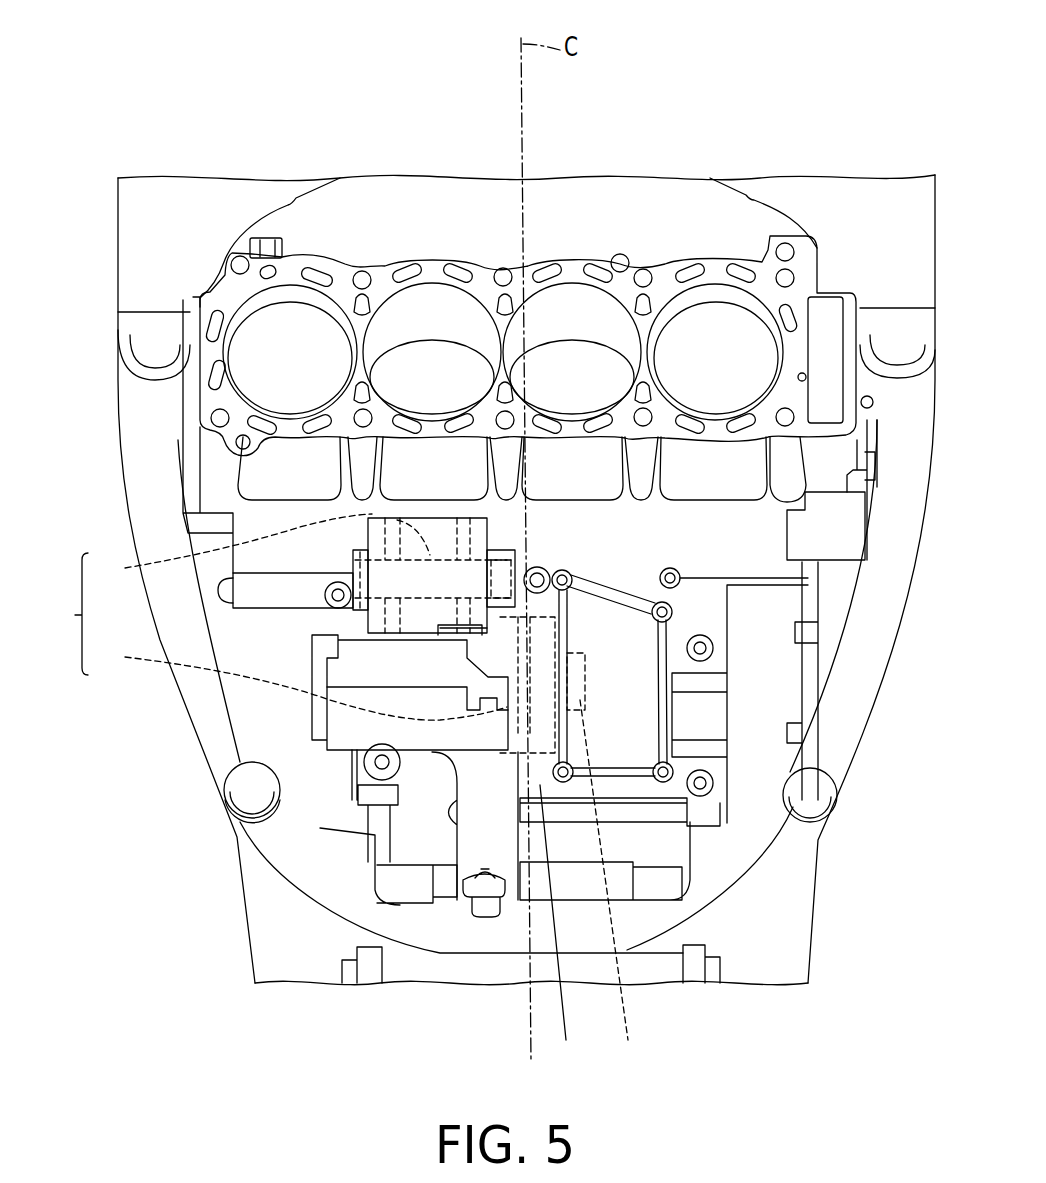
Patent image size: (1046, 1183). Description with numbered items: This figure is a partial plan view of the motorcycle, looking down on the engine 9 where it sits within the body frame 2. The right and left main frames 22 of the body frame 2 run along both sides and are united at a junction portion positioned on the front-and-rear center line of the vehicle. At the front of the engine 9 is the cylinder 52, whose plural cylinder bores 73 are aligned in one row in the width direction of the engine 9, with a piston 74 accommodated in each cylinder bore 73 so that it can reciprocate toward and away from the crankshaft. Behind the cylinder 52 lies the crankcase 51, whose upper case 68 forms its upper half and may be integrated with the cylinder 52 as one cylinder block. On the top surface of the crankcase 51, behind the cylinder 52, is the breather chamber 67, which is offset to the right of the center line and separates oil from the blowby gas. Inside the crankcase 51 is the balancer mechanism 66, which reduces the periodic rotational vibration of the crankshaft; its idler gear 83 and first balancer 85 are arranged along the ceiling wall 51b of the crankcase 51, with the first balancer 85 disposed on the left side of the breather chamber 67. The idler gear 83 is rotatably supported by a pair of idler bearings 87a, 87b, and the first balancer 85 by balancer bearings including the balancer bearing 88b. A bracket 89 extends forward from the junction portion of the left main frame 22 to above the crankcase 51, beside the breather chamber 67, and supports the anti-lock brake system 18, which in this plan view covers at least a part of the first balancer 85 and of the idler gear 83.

The body frame 2 is at (120, 481).
The engine 9 is at (666, 82).
The anti-lock brake system 18 is at (273, 803).
The main frames 22 is at (130, 510).
The crankcase 51 is at (268, 610).
The ceiling wall 51b is at (564, 926).
The cylinder 52 is at (190, 320).
The balancer mechanism 66 is at (65, 614).
The breather chamber 67 is at (673, 628).
The upper case 68 is at (261, 621).
The cylinder bores 73 is at (300, 293).
The piston 74 is at (273, 347).
The idler gear 83 is at (233, 550).
The first balancer 85 is at (301, 682).
The idler bearing 87a is at (353, 560).
The idler bearing 87b is at (513, 553).
The balancer bearing 88b is at (614, 883).
The bracket 89 is at (310, 717).